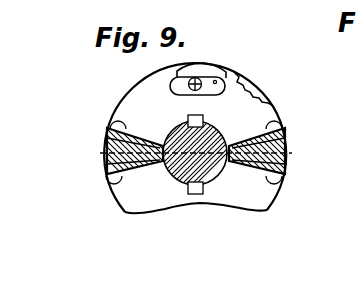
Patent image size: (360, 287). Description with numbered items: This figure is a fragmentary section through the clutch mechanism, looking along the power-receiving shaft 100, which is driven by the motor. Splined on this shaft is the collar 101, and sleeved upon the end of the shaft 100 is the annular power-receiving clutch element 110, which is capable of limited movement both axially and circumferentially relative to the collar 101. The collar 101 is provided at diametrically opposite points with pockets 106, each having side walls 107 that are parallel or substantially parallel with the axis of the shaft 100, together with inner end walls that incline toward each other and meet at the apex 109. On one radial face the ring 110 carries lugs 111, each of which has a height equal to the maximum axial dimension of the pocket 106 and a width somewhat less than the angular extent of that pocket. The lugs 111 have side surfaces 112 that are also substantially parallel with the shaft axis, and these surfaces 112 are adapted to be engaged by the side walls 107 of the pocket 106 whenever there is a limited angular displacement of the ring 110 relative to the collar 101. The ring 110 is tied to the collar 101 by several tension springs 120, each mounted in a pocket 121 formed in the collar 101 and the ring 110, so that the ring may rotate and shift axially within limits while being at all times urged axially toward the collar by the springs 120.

The power-receiving shaft 100 is at (180, 130).
The collar 101 is at (147, 84).
The pocket 106 is at (107, 130).
The side wall 107 is at (114, 116).
The apex 109 is at (105, 158).
The power-receiving clutch element 110 is at (252, 77).
The lug 111 is at (110, 177).
The side surface 112 is at (113, 184).
The tension spring 120 is at (176, 67).
The pocket 121 is at (216, 80).